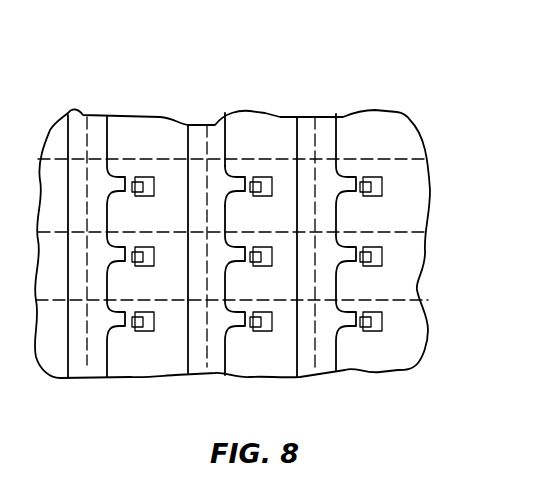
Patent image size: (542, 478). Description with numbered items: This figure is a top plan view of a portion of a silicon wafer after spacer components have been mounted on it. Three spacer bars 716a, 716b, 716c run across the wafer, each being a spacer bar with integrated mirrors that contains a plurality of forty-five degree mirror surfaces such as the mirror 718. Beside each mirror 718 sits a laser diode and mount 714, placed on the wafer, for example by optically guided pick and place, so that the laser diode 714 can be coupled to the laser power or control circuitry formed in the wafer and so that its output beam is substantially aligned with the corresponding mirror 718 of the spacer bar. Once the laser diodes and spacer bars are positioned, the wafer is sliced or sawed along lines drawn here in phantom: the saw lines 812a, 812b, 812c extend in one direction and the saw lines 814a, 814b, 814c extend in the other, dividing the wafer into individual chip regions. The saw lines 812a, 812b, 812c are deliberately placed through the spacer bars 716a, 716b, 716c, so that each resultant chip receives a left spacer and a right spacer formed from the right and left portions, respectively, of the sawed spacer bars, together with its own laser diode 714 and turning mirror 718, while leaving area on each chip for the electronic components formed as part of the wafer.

The laser diode and mount 714 is at (275, 192).
The spacer bar with integrated mirrors 716a is at (93, 127).
The spacer bar with integrated mirrors 716b is at (218, 127).
The spacer bar with integrated mirrors 716c is at (328, 128).
The mirror surface 718 is at (230, 183).
The saw line 812a is at (90, 357).
The saw line 812b is at (212, 347).
The saw line 812c is at (318, 347).
The saw line 814a is at (405, 150).
The saw line 814b is at (410, 227).
The saw line 814c is at (413, 290).